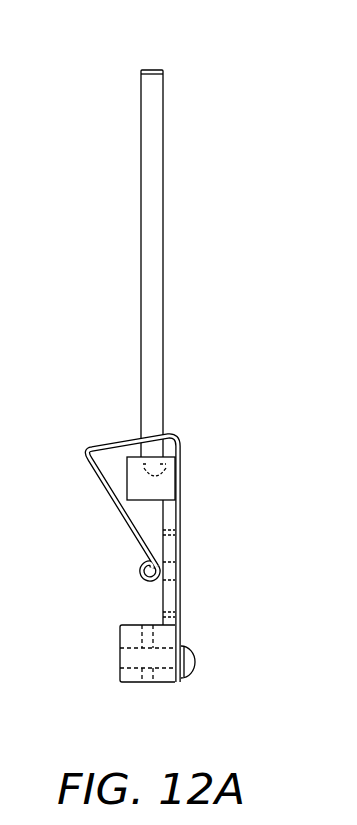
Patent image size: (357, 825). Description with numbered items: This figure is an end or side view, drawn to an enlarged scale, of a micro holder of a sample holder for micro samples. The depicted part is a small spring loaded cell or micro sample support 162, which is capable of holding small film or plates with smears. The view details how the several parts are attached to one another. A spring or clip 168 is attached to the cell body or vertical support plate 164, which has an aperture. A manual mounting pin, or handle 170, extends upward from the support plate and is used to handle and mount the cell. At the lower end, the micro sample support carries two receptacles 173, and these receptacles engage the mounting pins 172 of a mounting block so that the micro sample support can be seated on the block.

The micro sample support 162 is at (121, 378).
The vertical support plate 164 is at (183, 500).
The spring or clip 168 is at (84, 449).
The handle 170 is at (141, 70).
The mounting pin 172 is at (197, 668).
The receptacle 173 is at (140, 683).